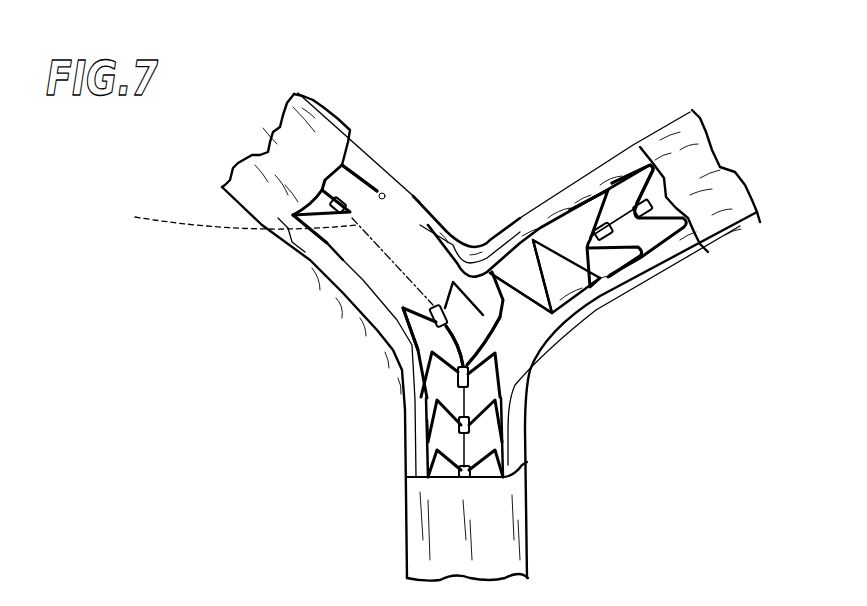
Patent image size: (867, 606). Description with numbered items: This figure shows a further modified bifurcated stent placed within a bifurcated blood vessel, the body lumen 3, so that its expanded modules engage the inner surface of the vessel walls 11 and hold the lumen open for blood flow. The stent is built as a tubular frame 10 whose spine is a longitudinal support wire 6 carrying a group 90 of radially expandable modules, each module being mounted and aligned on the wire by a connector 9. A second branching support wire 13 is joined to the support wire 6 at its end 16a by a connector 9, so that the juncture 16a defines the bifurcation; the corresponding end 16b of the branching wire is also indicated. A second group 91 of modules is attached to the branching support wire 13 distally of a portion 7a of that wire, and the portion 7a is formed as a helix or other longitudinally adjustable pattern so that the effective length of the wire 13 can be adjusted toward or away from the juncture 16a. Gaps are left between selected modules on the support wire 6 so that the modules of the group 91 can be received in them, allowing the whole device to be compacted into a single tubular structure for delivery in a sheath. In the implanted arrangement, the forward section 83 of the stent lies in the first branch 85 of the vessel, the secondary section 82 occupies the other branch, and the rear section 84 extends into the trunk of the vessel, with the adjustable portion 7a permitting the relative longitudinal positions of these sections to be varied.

The body lumen 3 is at (400, 220).
The longitudinal support wire 6 is at (273, 254).
The longitudinally adjustable portion of the support wire 7a is at (562, 270).
The connector 9 is at (460, 376).
The tubular frame 10 is at (418, 352).
The walls of the body lumen 11 is at (377, 190).
The second branching support wire 13 is at (502, 275).
The end (juncture) 16a is at (478, 352).
The second stent leg 16b is at (653, 196).
The secondary section of the stent 82 is at (352, 137).
The forward section of the stent 83 is at (596, 187).
The rear section of the stent 84 is at (502, 448).
The first branch of the blood vessel 85 is at (708, 173).
The group of modules 90 is at (398, 518).
The second group of modules 91 is at (562, 180).